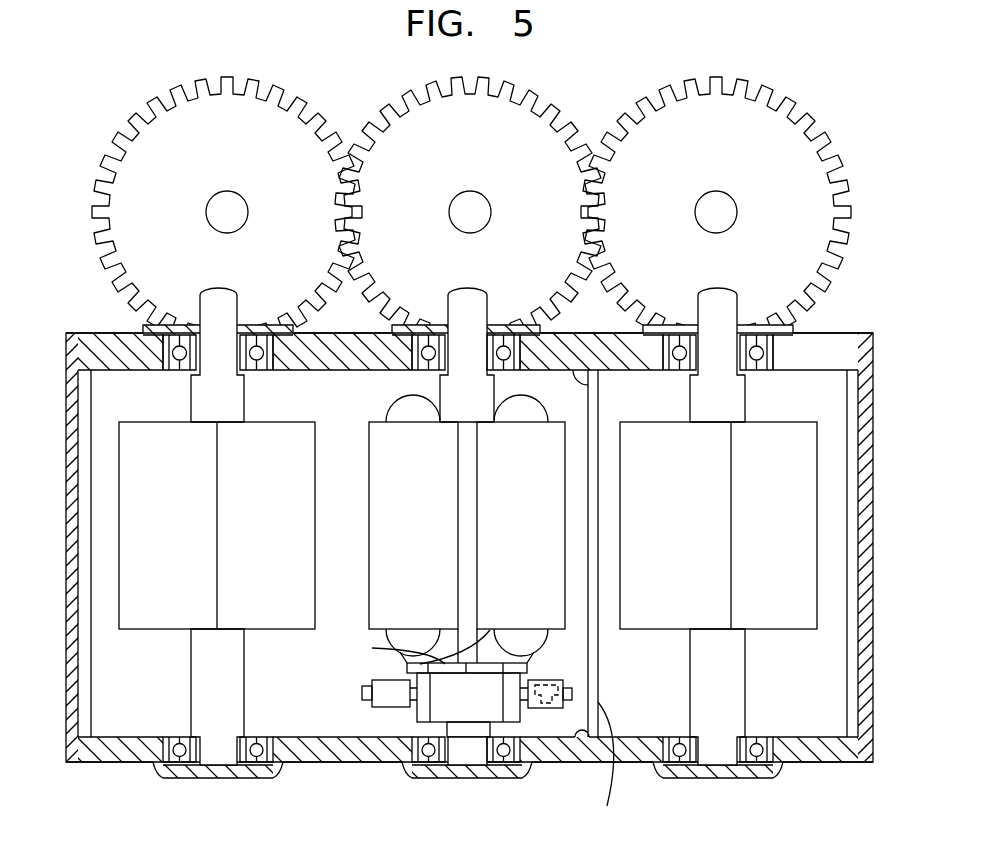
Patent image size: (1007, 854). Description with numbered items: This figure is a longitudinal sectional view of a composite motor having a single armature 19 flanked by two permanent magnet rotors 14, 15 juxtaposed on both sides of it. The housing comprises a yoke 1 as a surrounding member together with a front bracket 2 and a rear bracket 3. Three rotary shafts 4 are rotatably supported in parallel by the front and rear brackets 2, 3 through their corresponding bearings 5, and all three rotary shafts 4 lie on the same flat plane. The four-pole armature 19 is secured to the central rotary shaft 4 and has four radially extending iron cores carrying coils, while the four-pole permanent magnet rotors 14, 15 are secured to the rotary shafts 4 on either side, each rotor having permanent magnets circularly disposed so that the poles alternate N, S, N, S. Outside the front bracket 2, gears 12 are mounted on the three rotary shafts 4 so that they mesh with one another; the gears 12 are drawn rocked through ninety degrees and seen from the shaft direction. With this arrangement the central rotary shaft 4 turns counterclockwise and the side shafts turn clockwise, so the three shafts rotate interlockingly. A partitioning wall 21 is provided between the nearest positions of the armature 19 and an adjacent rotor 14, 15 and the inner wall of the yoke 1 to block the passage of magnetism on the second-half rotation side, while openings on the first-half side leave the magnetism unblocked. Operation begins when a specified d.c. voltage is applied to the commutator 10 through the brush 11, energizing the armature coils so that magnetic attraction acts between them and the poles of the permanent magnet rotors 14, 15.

The yoke 1 is at (66, 553).
The front bracket 2 is at (103, 333).
The rear bracket 3 is at (340, 762).
The rotary shaft 4 is at (210, 725).
The bearing 5 is at (762, 350).
The commutator 10 is at (450, 670).
The brush 11 is at (545, 704).
The gear 12 is at (655, 150).
The permanent magnet rotor 14 is at (133, 605).
The permanent magnet rotor 15 is at (650, 612).
The armature 19 is at (389, 607).
The partitioning wall 21 is at (611, 770).